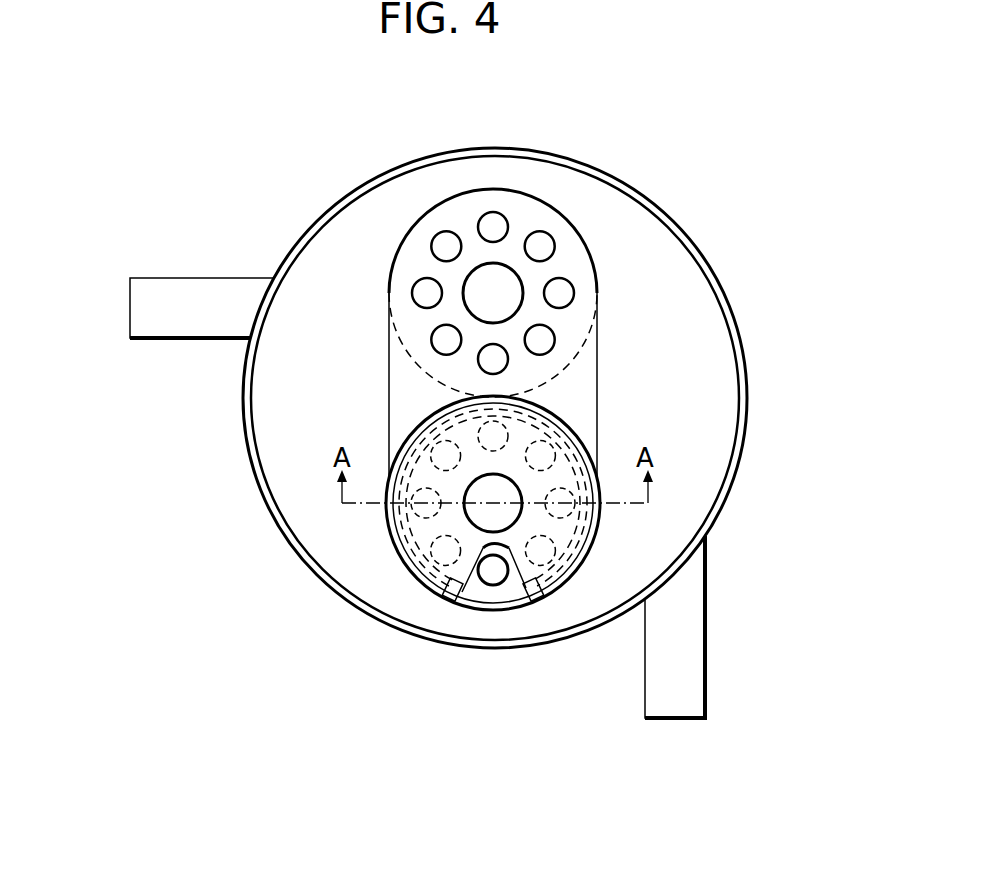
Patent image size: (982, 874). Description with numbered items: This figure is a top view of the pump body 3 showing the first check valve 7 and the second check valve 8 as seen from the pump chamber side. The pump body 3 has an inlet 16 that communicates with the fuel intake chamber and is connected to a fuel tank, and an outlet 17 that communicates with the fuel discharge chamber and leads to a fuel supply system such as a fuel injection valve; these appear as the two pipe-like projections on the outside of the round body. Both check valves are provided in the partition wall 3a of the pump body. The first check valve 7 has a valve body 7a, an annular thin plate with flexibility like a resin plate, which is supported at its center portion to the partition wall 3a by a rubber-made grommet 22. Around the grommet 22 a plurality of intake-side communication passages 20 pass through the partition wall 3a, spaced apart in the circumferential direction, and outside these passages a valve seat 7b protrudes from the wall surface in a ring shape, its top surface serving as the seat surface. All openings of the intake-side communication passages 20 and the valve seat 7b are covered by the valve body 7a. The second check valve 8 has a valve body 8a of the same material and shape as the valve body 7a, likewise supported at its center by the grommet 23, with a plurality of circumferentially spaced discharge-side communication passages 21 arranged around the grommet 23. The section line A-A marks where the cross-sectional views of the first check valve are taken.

The pump body 3 is at (666, 208).
The partition wall 3a is at (675, 386).
The first check valve 7 is at (436, 552).
The valve body 7a is at (447, 584).
The valve seat 7b is at (520, 590).
The second check valve 8 is at (390, 280).
The valve body 8a is at (405, 352).
The inlet 16 is at (675, 718).
The outlet 17 is at (130, 303).
The intake-side communication passages 20 is at (493, 586).
The discharge-side communication passages 21 is at (493, 212).
The grommet 22 is at (467, 514).
The grommet 23 is at (506, 266).